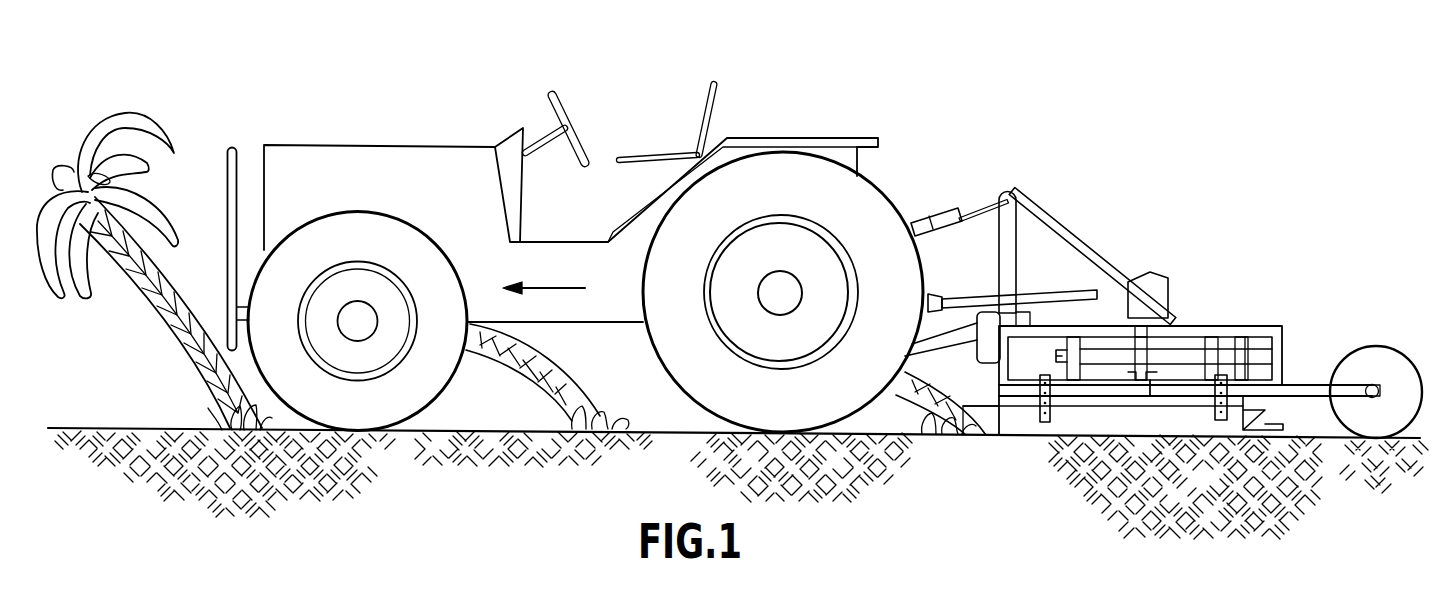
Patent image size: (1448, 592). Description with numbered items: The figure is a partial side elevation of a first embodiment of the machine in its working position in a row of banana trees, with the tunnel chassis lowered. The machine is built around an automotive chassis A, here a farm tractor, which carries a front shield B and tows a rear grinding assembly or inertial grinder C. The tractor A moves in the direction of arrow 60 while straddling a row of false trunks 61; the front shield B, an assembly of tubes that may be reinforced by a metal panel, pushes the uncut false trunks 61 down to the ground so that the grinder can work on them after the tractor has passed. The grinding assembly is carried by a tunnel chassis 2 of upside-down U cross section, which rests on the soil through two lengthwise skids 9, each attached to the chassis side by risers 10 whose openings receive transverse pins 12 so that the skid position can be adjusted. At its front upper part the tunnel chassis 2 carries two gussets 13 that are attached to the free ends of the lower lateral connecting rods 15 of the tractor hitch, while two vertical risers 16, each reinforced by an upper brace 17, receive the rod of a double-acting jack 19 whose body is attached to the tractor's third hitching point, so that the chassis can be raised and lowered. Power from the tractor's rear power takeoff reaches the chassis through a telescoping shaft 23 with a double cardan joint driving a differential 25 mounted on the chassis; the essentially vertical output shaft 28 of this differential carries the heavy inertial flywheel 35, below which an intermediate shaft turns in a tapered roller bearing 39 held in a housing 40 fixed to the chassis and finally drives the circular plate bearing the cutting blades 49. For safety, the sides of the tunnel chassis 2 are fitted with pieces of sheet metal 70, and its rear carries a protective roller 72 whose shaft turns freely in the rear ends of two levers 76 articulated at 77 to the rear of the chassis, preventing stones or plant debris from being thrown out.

The automotive chassis A is at (886, 162).
The front shield B is at (245, 124).
The rear grinding assembly C is at (1089, 229).
The tunnel chassis 2 is at (1266, 327).
The lengthwise skids 9 is at (989, 422).
The risers 10 is at (1045, 424).
The transverse pins 12 is at (1051, 386).
The gussets 13 is at (1016, 320).
The lower lateral connecting rods 15 is at (966, 330).
The vertical risers 16 is at (1005, 275).
The upper braces 17 is at (1036, 212).
The double-acting jack 19 is at (935, 226).
The telescoping shaft 23 is at (1028, 297).
The differential 25 is at (1150, 278).
The output shaft 28 is at (1162, 347).
The inertial flywheel 35 is at (1057, 358).
The tapered roller bearing 39 is at (1150, 380).
The housing 40 is at (942, 486).
The cutting blades 49 is at (1263, 424).
The arrow 60 is at (546, 273).
The false trunks 61 is at (155, 300).
The pieces of sheet metal 70 is at (1017, 400).
The protective roller 72 is at (1352, 327).
The levers 76 is at (1284, 386).
The articulation point 77 is at (1253, 386).